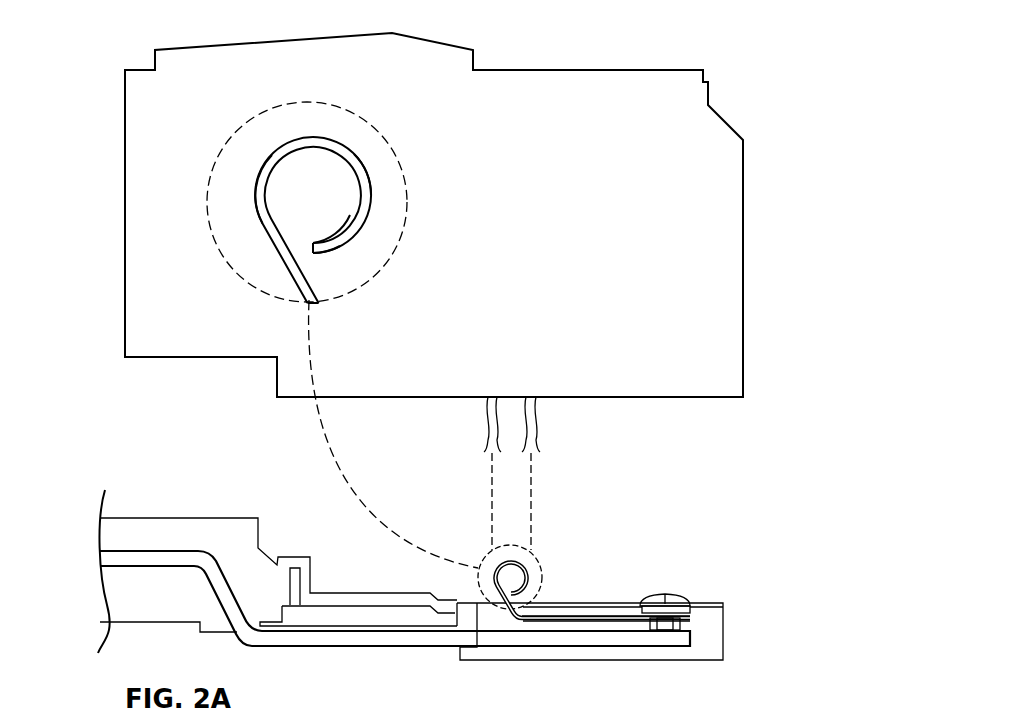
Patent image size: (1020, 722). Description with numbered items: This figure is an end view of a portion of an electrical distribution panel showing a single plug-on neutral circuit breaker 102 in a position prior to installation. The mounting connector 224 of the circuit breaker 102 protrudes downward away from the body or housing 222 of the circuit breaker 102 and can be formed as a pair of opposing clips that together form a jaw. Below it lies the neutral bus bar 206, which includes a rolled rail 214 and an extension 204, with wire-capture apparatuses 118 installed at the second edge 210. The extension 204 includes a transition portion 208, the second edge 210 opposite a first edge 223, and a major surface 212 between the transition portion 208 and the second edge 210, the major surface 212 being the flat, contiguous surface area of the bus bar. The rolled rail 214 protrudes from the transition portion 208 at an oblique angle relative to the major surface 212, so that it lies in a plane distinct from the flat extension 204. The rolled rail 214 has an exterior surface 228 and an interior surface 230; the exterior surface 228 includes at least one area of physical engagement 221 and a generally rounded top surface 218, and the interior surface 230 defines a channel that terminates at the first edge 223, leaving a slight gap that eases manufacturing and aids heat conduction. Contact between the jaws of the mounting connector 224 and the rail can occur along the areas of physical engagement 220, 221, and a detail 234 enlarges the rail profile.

The plug-on neutral circuit breaker 102 is at (620, 346).
The wire-capture apparatus 118 is at (687, 585).
The extension 204 is at (580, 612).
The neutral bus bar 206 is at (617, 633).
The transition portion 208 is at (537, 603).
The second edge 210 is at (690, 617).
The major surface 212 is at (607, 612).
The rolled rail 214 is at (251, 103).
The generally rounded top surface 218 is at (340, 127).
The area of physical engagement 220 is at (511, 418).
The area of physical engagement 221 is at (393, 194).
The housing 222 is at (145, 233).
The first edge 223 is at (313, 253).
The mounting connector 224 is at (574, 445).
The exterior surface 228 is at (263, 167).
The interior surface 230 is at (322, 242).
The hook opening 234 is at (323, 203).